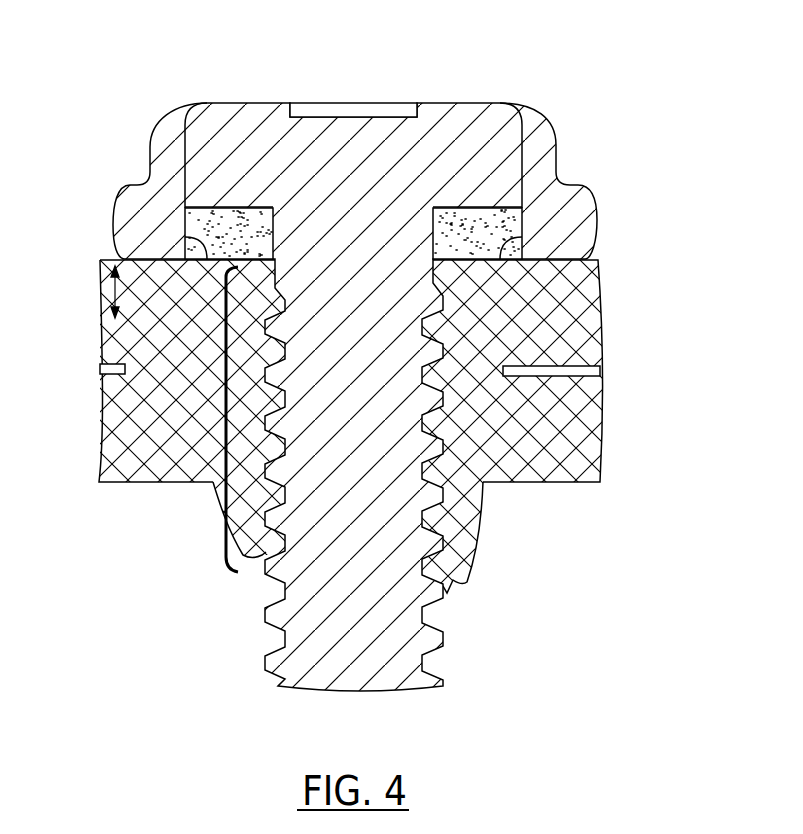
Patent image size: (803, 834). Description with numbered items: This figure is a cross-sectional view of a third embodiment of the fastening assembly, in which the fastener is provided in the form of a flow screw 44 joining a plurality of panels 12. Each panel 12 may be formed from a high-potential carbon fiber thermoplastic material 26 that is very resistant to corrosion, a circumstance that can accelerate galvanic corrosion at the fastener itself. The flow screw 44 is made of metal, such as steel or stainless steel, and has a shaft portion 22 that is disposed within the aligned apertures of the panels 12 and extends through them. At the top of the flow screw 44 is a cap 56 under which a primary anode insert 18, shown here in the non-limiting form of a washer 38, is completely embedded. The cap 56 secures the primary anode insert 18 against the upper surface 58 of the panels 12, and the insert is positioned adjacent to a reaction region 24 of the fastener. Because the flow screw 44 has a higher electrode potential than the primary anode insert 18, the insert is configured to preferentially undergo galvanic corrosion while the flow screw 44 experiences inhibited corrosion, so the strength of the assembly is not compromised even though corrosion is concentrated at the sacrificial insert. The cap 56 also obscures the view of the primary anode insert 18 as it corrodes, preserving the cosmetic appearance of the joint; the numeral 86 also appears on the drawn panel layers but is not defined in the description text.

The panel 12 is at (402, 430).
The primary anode insert 18 is at (349, 209).
The shaft portion 22 is at (224, 421).
The reaction region 24 is at (227, 204).
The carbon fiber thermoplastic material 26 is at (402, 430).
The washer 38 is at (195, 220).
The flow screw 44 is at (305, 165).
The cap 56 is at (430, 150).
The upper surface 58 is at (188, 237).
The second component layer 86 is at (587, 330).